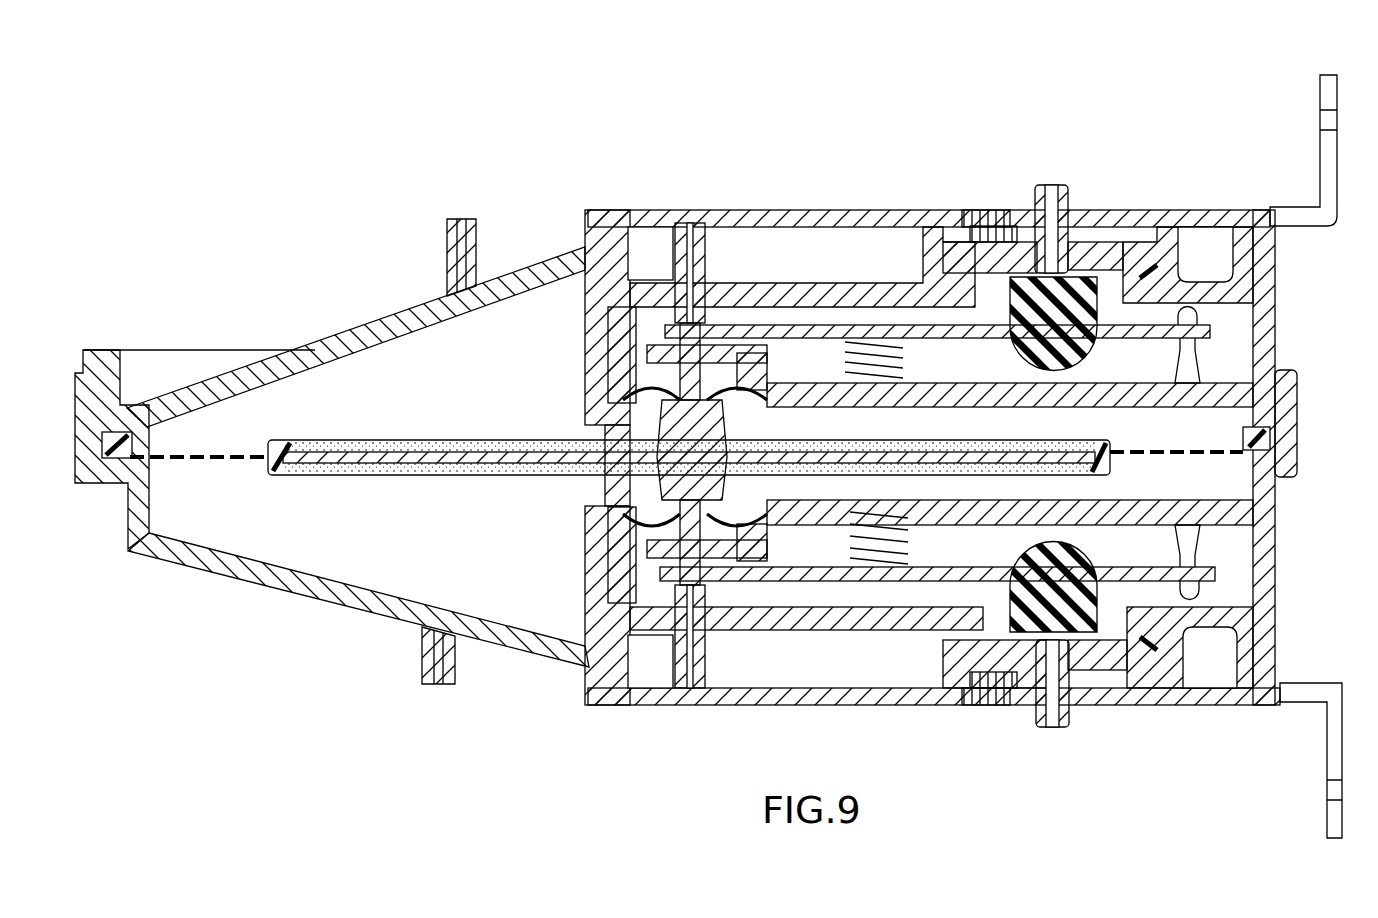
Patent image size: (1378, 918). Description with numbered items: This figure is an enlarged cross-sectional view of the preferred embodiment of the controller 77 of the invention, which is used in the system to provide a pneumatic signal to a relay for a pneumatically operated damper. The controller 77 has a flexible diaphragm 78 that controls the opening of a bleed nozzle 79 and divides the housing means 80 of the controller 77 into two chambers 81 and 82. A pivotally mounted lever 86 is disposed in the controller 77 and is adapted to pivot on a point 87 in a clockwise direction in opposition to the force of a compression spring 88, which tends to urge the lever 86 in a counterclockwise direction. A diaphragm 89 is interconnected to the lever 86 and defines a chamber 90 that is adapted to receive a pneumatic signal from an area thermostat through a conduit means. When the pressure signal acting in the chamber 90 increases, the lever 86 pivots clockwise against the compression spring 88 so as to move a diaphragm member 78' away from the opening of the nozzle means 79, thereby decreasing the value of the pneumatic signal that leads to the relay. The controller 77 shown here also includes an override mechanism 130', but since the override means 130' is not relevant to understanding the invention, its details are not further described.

The controller 77 is at (880, 193).
The flexible diaphragm 78 is at (700, 446).
The diaphragm member 78' is at (865, 455).
The bleed nozzle 79 is at (620, 585).
The housing means 80 is at (786, 210).
The chamber 81 is at (395, 350).
The chamber 82 is at (380, 575).
The pivotally mounted lever 86 is at (960, 574).
The point 87 is at (1190, 578).
The compression spring 88 is at (860, 540).
The diaphragm 89 is at (1015, 640).
The chamber 90 is at (1090, 640).
The override mechanism 130' is at (1108, 263).